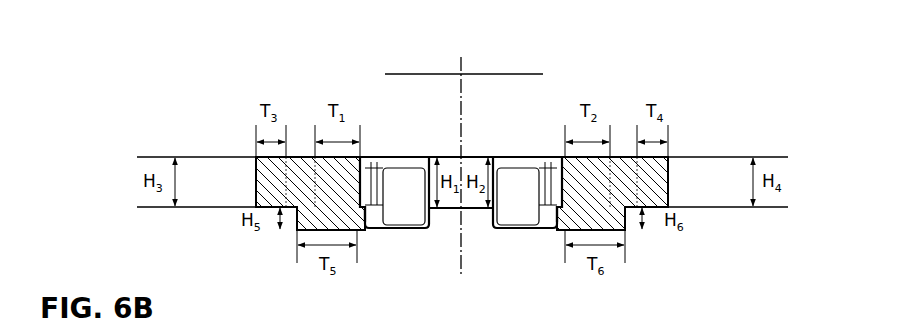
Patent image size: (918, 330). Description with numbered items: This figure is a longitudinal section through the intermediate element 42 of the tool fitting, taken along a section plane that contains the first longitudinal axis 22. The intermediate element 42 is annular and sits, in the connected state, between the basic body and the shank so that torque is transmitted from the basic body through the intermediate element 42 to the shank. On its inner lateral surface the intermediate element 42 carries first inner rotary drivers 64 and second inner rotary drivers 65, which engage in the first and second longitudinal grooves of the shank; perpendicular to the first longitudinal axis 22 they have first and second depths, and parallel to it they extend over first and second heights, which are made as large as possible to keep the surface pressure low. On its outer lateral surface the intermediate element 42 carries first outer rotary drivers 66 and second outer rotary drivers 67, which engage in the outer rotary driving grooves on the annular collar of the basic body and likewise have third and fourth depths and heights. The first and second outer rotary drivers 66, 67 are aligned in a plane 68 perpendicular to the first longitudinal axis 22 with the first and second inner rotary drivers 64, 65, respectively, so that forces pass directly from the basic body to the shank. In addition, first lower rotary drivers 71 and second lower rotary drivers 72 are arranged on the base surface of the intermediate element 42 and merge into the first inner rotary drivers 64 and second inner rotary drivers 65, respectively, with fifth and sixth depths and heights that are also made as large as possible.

The intermediate element 42 is at (114, 180).
The first longitudinal axis 22 is at (462, 189).
The first inner rotary drivers 64 is at (342, 190).
The second inner rotary drivers 65 is at (580, 190).
The first outer rotary drivers 66 is at (272, 185).
The second outer rotary drivers 67 is at (645, 181).
The plane 68 is at (484, 72).
The first lower rotary drivers 71 is at (362, 231).
The second lower rotary drivers 72 is at (560, 231).